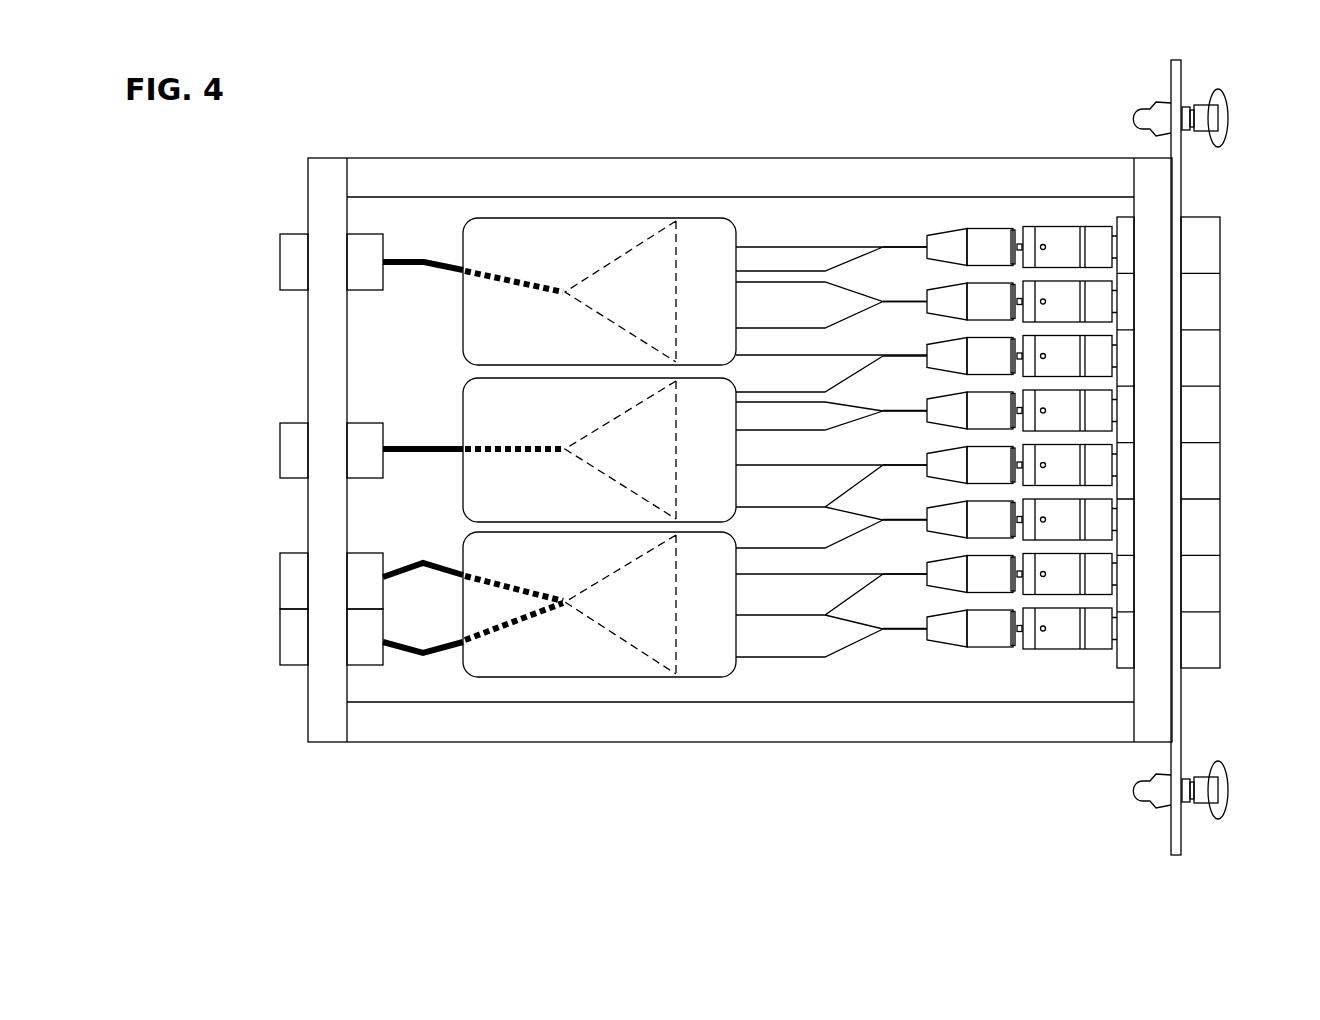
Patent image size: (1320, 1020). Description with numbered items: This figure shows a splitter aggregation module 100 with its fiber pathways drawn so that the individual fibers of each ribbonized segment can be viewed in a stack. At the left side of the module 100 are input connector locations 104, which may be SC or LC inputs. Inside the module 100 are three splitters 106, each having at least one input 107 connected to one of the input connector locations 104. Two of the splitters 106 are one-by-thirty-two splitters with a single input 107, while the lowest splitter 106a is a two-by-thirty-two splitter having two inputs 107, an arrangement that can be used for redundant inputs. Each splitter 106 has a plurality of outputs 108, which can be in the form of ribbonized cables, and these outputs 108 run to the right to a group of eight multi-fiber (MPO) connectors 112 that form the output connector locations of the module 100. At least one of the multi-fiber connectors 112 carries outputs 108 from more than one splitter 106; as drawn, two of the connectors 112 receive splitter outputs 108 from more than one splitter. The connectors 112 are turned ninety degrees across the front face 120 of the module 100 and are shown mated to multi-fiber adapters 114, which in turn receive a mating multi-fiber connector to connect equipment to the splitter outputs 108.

The splitter aggregation module 100 is at (587, 123).
The input connector locations 104 is at (284, 234).
The splitters 106 is at (599, 510).
The 2×32 splitter 106a is at (599, 678).
The input 107 is at (494, 275).
The outputs 108 is at (770, 244).
The multi-fiber connectors 112 is at (1057, 238).
The multi-fiber adapters 114 is at (1220, 247).
The front face 120 is at (1175, 742).